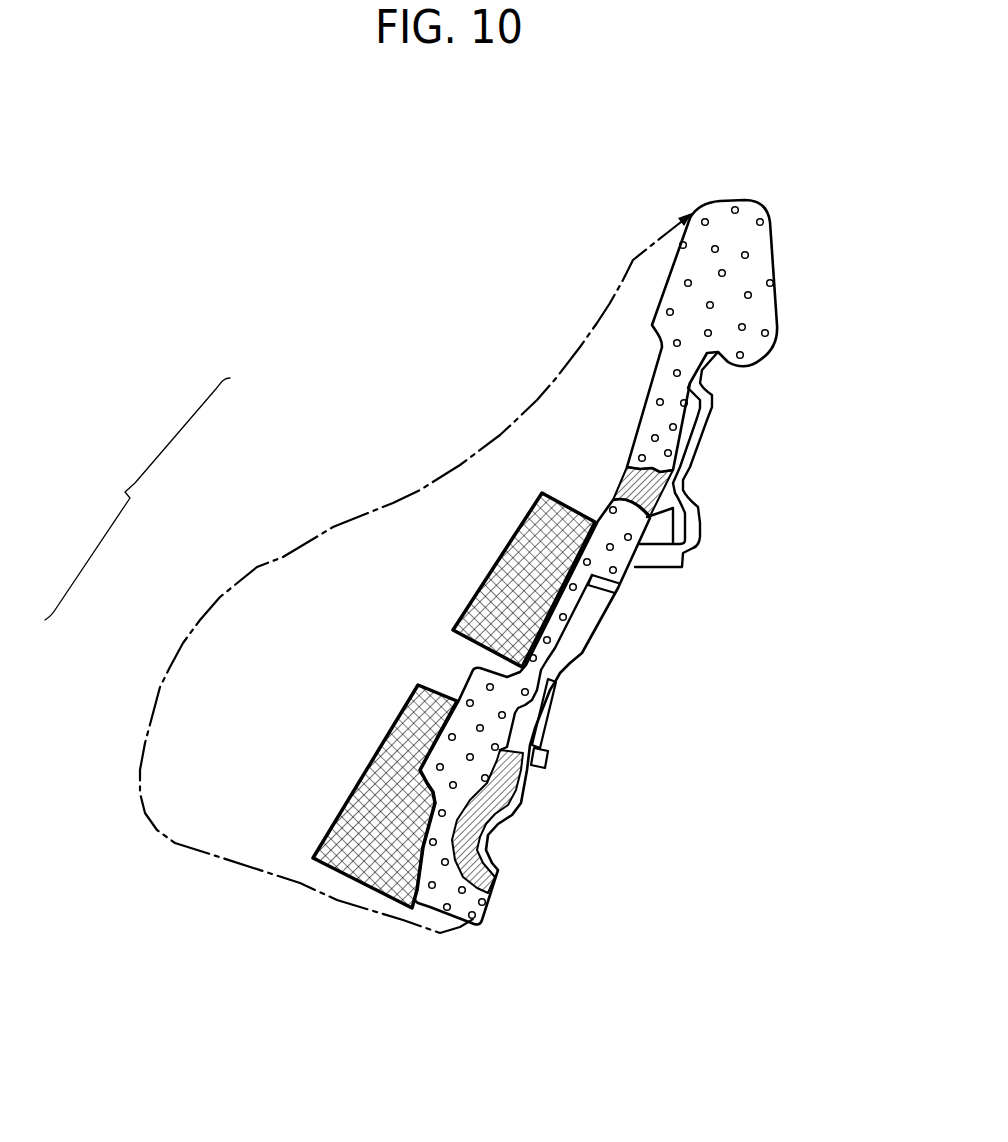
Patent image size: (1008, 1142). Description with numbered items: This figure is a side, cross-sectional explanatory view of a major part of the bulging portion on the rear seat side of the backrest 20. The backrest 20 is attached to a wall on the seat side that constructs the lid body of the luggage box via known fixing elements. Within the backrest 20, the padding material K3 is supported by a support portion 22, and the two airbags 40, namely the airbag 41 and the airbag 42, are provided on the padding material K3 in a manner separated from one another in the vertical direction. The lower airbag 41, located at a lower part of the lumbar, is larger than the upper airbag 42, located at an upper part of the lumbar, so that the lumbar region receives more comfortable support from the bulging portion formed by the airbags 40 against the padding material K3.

The backrest 20 is at (499, 395).
The padding material K3 is at (725, 215).
The support portion 22 is at (705, 413).
The airbags 40 is at (137, 499).
The airbag 41 is at (380, 777).
The airbag 42 is at (503, 575).